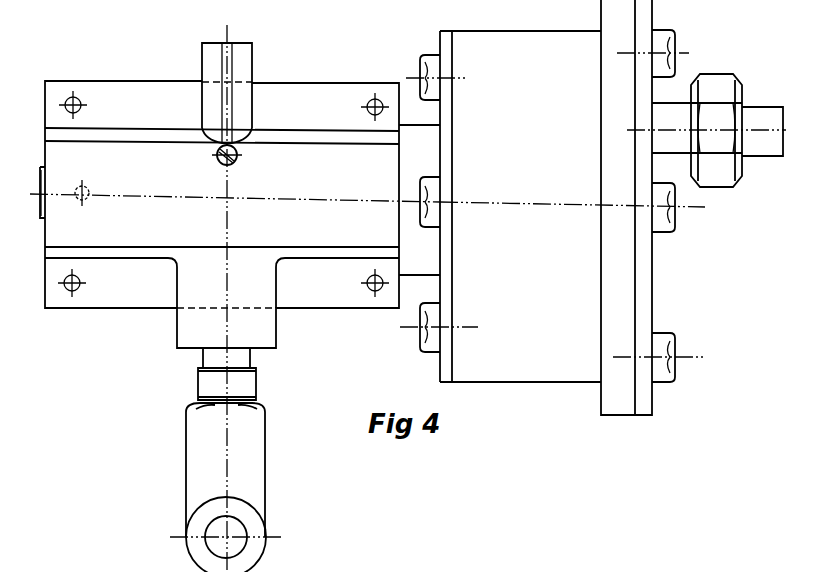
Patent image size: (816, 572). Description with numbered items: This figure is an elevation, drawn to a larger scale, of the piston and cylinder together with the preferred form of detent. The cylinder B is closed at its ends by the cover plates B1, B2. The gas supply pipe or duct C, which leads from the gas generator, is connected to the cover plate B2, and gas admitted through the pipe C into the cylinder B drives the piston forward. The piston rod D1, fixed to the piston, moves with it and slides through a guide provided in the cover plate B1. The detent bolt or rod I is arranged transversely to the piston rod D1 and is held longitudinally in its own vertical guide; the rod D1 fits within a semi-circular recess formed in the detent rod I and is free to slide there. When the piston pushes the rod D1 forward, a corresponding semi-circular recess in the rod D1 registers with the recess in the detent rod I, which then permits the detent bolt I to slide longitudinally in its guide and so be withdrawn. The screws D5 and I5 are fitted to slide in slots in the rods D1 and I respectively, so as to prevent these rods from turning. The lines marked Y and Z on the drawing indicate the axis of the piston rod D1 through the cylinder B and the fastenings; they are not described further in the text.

The detent bolt or rod I is at (242, 50).
The screw I5 is at (233, 162).
The piston rod D1 is at (41, 167).
The screw D5 is at (86, 190).
The axis line Y is at (228, 189).
The axis line Z is at (572, 195).
The cylinder B is at (519, 38).
The cover plate B1 is at (442, 44).
The cover plate B2 is at (650, 13).
The gas supply pipe or duct C is at (766, 107).